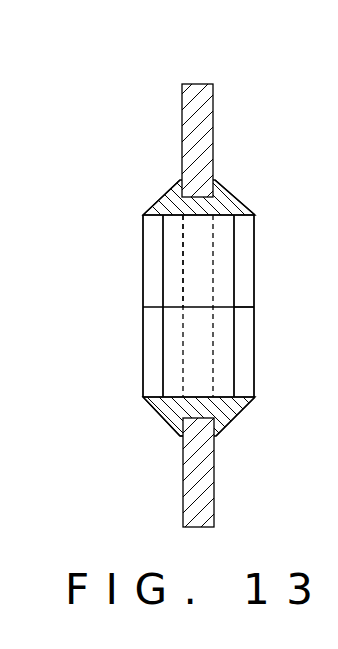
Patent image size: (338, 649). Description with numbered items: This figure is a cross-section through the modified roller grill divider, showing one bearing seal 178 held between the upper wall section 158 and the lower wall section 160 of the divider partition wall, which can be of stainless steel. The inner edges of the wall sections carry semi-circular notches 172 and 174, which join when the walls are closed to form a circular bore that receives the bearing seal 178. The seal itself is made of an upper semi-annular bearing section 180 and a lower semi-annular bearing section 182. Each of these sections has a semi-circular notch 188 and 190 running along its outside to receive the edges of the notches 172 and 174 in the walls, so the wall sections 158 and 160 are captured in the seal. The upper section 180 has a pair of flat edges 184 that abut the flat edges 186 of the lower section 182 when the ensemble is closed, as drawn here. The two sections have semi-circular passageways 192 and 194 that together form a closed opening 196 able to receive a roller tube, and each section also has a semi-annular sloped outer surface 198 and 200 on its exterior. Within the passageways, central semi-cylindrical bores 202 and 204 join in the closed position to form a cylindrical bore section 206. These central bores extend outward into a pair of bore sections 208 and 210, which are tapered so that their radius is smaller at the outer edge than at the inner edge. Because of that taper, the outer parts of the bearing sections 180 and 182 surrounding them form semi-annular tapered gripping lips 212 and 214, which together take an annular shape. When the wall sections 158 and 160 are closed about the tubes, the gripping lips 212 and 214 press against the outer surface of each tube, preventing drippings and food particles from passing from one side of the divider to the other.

The upper wall section 158 is at (200, 83).
The lower wall section 160 is at (192, 530).
The semi-circular notch 172 is at (150, 212).
The semi-circular notch 174 is at (236, 411).
The bearing seal 178 is at (260, 168).
The upper semi-annular bearing section 180 is at (162, 188).
The lower semi-annular bearing section 182 is at (242, 428).
The flat edge 184 is at (243, 305).
The flat edge 186 is at (150, 313).
The semi-circular notch 188 is at (210, 163).
The semi-circular notch 190 is at (180, 427).
The semi-circular passageway 192 is at (240, 256).
The semi-circular passageway 194 is at (242, 370).
The closed opening 196 is at (270, 310).
The semi-annular sloped outer surface 198 is at (243, 208).
The semi-annular sloped outer surface 200 is at (220, 436).
The central semi-cylindrical bore 202 is at (160, 253).
The central semi-cylindrical bore 204 is at (160, 345).
The cylindrical bore section 206 is at (178, 283).
The bore section 208 is at (152, 233).
The bore section 210 is at (150, 373).
The semi-annular tapered gripping lip 212 is at (148, 214).
The semi-annular tapered gripping lip 214 is at (148, 404).